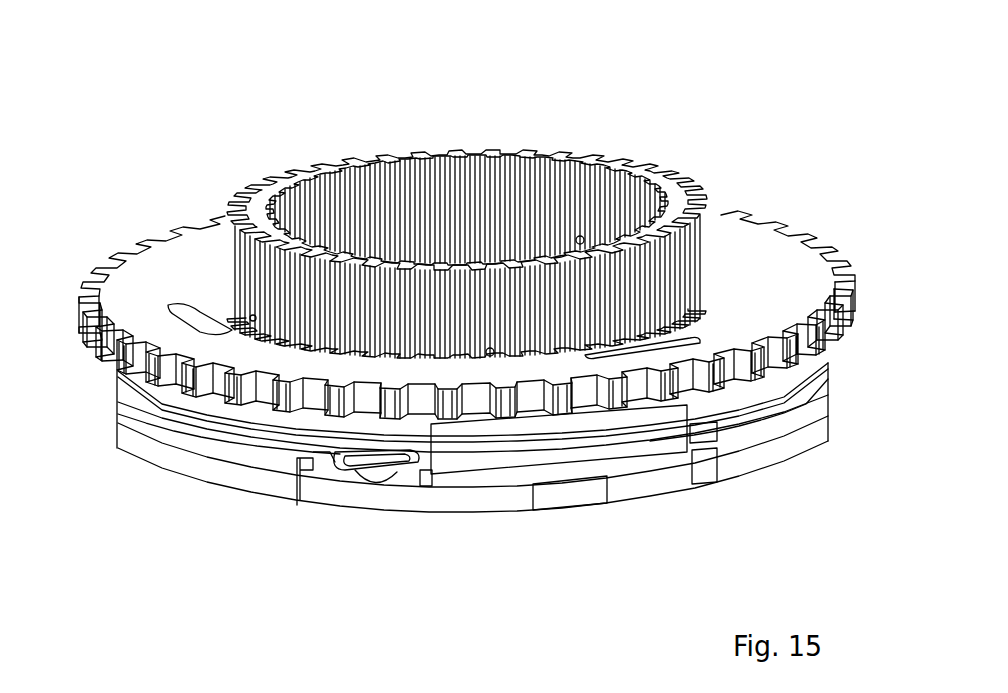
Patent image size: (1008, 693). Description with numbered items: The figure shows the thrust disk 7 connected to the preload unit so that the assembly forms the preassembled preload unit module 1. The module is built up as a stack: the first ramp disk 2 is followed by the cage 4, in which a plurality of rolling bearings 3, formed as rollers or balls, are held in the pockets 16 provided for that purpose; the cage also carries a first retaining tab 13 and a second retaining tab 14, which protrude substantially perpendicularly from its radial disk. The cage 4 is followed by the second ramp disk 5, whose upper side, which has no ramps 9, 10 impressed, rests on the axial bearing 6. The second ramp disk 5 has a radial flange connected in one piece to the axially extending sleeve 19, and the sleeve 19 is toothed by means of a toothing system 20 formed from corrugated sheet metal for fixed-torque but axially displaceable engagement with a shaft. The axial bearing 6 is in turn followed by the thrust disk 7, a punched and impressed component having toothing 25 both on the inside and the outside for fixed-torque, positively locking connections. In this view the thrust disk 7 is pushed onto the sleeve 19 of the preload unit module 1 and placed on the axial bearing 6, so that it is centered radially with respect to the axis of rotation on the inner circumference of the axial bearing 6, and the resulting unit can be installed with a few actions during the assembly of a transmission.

The preload unit module 1 is at (236, 182).
The first ramp disk 2 is at (504, 500).
The rolling bearings 3 is at (378, 482).
The cage 4 is at (398, 498).
The second ramp disk 5 is at (783, 400).
The axial bearing 6 is at (267, 415).
The thrust disk 7 is at (172, 360).
The ramps 9 is at (428, 484).
The ramps 10 is at (340, 478).
The first retaining tab 13 is at (553, 450).
The second retaining tab 14 is at (200, 473).
The pockets 16 is at (330, 457).
The sleeve 19 is at (587, 162).
The toothing system 20 is at (404, 193).
The toothing 25 is at (835, 264).